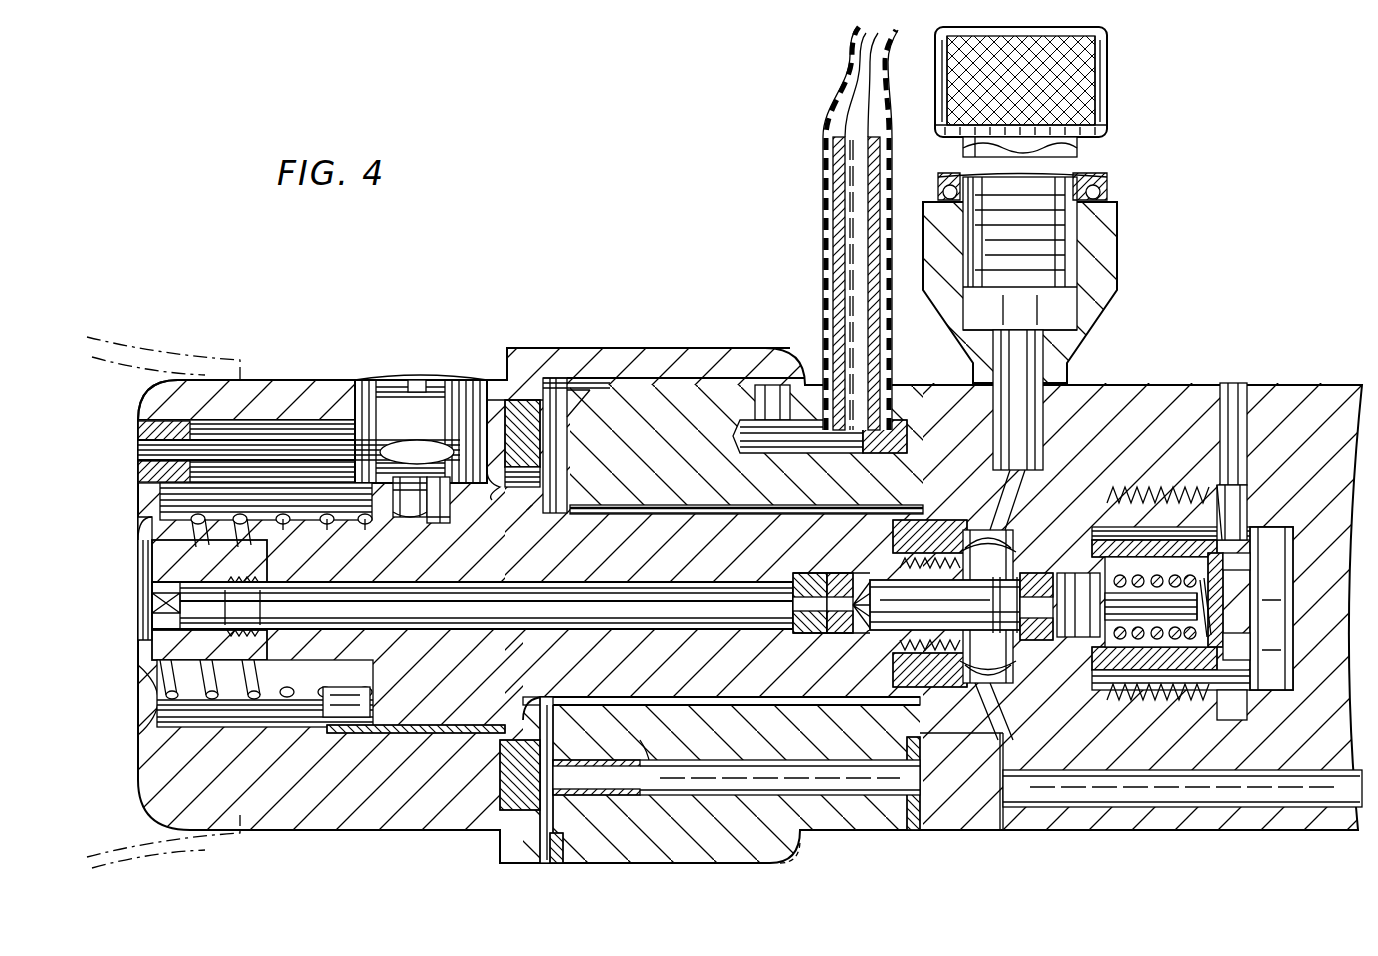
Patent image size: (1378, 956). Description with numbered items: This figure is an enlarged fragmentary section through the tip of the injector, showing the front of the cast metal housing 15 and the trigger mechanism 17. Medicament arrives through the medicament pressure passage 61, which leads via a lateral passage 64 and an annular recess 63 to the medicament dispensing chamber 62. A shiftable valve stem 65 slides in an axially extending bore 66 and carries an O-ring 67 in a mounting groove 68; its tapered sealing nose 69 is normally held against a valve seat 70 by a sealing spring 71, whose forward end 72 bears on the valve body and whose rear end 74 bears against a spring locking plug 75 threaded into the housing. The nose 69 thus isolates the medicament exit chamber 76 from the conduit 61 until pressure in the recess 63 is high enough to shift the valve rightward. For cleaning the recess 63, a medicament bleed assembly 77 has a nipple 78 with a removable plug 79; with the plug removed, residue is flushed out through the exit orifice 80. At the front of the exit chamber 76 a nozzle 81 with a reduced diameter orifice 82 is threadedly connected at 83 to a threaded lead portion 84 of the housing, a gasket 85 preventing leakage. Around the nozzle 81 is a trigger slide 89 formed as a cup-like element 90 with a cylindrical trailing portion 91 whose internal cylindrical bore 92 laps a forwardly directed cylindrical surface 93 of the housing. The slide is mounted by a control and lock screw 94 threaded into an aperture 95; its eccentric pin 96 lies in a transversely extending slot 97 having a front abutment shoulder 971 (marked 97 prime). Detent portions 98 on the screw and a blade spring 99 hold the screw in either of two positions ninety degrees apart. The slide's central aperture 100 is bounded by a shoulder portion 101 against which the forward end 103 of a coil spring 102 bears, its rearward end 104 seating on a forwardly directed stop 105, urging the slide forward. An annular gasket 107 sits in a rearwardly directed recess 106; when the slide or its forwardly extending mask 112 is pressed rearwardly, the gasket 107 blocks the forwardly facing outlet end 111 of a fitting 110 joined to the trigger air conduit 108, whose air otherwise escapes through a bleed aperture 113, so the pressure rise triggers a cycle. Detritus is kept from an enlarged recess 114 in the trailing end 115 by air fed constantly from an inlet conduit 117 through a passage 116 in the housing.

The housing 15 is at (1113, 830).
The trigger mechanism 17 is at (445, 337).
The medicament pressure passage 61 is at (1218, 796).
The medicament dispensing chamber 62 is at (844, 582).
The annular recess 63 is at (1006, 683).
The lateral passage 64 is at (986, 713).
The valve stem 65 is at (989, 616).
The axially extending bore 66 is at (870, 638).
The O-ring 67 is at (1032, 577).
The mounting groove 68 is at (1087, 619).
The sealing nose 69 is at (818, 583).
The valve seat 70 is at (840, 634).
The sealing spring 71 is at (1171, 573).
The forward end of spring 72 is at (1113, 549).
The rear end of spring 74 is at (1213, 578).
The spring locking plug 75 is at (1244, 513).
The medicament exit chamber 76 is at (567, 606).
The medicament bleed assembly 77 is at (1057, 248).
The nipple 78 is at (1112, 240).
The removable plug 79 is at (1113, 105).
The exit orifice 80 is at (1030, 373).
The nozzle 81 is at (158, 578).
The reduced diameter orifice 82 is at (152, 611).
The threaded connection 83 is at (226, 665).
The threaded lead portion 84 is at (238, 640).
The gasket 85 is at (258, 665).
The trigger slide 89 is at (207, 378).
The cup-like element 90 is at (330, 378).
The cylindrical trailing portion 91 is at (607, 366).
The internal cylindrical bore 92 is at (640, 378).
The forwardly directed cylindrical surface 93 is at (688, 378).
The control and lock screw 94 is at (370, 383).
The aperture 95 is at (494, 383).
The eccentric pin 96 is at (438, 523).
The transversely extending slot 97 is at (405, 517).
The front abutment shoulder 971 is at (395, 524).
The detent portions 98 is at (402, 442).
The blade spring 99 is at (142, 447).
The central aperture 100 is at (147, 549).
The shoulder portion 101 is at (152, 690).
The coil spring 102 is at (198, 518).
The forward end of coil spring 103 is at (142, 735).
The rearward end of coil spring 104 is at (372, 688).
The forwardly directed stop 105 is at (375, 713).
The rearwardly directed recess 106 is at (523, 843).
The annular gasket 107 is at (500, 790).
The trigger air conduit 108 is at (813, 780).
The fitting 110 is at (656, 795).
The forwardly facing outlet end 111 is at (600, 805).
The mask 112 is at (118, 858).
The bleed aperture 113 is at (560, 863).
The enlarged recess 114 is at (757, 350).
The trailing end of slide 115 is at (771, 385).
The passage 116 is at (866, 386).
The inlet conduit 117 is at (856, 199).